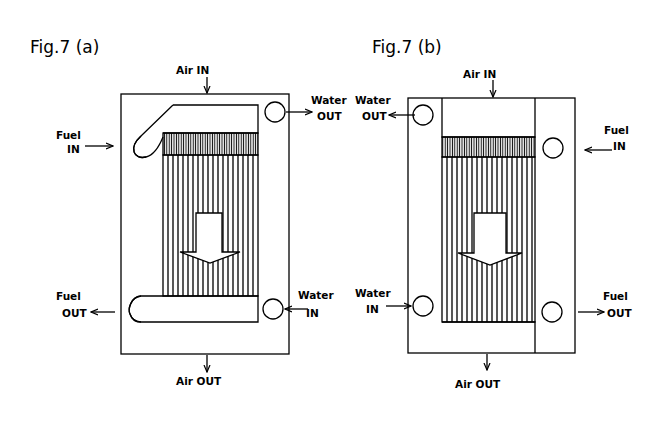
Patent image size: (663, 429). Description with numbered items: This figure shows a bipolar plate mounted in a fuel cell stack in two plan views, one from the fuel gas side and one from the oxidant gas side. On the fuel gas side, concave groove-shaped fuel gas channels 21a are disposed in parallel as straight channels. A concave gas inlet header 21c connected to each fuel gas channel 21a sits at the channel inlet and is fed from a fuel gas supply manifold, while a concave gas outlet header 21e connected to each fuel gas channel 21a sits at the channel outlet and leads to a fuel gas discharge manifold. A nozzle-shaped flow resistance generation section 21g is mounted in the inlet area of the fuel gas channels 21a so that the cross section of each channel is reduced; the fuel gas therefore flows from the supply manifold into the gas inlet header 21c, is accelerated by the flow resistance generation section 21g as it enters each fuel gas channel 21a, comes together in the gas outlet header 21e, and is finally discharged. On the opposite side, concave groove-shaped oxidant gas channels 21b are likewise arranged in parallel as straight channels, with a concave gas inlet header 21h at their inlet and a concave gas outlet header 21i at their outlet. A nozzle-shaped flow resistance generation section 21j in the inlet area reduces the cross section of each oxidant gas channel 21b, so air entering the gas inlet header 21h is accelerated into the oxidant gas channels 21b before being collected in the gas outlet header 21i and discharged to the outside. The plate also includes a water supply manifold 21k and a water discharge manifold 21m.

The fuel gas channel 21a is at (246, 180).
The oxidant gas channel 21b is at (528, 188).
The gas inlet header 21c is at (240, 118).
The gas outlet header 21e is at (236, 317).
The flow resistance generation section 21g is at (250, 146).
The gas inlet header 21h is at (511, 113).
The gas outlet header 21i is at (516, 340).
The flow resistance generation section 21j is at (527, 137).
The water supply manifold 21k is at (420, 313).
The water discharge manifold 21m is at (421, 117).